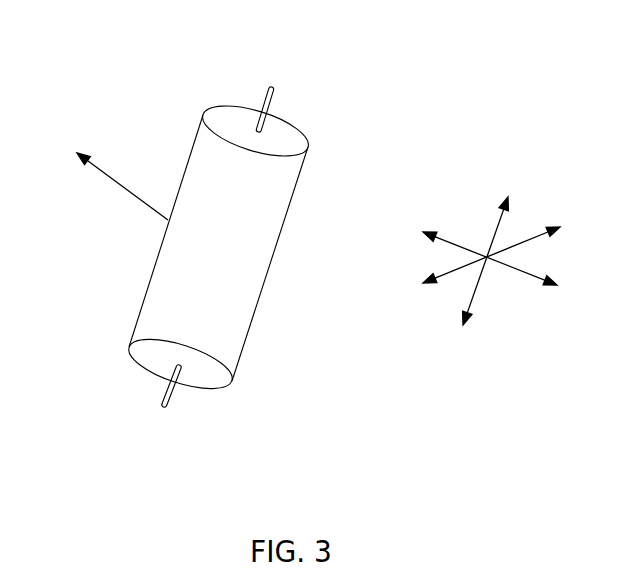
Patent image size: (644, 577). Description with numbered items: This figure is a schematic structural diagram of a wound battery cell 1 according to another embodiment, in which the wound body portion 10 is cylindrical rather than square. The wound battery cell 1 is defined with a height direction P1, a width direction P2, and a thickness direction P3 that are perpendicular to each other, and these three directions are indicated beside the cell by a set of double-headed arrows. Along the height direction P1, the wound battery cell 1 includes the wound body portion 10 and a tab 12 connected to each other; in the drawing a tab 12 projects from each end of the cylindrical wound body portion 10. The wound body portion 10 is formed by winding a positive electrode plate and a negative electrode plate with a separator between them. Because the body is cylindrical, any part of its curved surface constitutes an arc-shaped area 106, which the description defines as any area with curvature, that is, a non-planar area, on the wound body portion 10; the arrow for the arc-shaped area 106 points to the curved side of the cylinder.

The wound battery cell 1 is at (149, 54).
The wound body portion 10 is at (228, 258).
The tab 12 is at (268, 110).
The arc-shaped area 106 is at (98, 185).
The height direction P1 is at (494, 249).
The width direction P2 is at (474, 253).
The thickness direction P3 is at (505, 250).